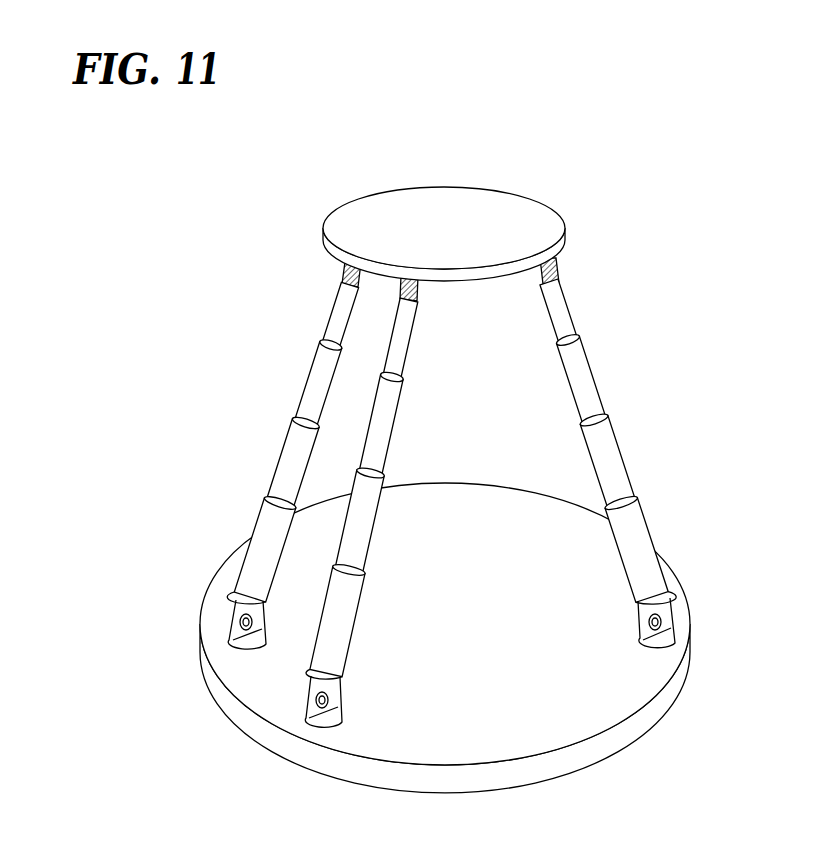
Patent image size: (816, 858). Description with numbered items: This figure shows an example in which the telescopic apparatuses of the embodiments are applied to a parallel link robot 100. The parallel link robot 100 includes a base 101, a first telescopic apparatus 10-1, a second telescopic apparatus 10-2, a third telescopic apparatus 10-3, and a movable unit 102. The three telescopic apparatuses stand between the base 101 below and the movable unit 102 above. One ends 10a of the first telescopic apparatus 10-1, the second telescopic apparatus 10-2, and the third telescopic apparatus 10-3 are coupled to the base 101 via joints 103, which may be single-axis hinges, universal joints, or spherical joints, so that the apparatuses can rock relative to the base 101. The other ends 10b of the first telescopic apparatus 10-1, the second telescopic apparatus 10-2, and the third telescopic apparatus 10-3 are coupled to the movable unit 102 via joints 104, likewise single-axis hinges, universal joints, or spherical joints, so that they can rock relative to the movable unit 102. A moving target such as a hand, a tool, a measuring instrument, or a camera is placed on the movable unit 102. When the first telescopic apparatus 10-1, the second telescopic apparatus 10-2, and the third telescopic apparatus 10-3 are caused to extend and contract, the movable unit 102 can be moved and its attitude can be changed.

The parallel link robot 100 is at (557, 108).
The base 101 is at (538, 730).
The movable unit 102 is at (468, 207).
The joints 103 is at (230, 622).
The joints 104 is at (345, 273).
The first telescopic apparatus 10-1 is at (601, 381).
The second telescopic apparatus 10-2 is at (398, 418).
The third telescopic apparatus 10-3 is at (300, 386).
The one ends 10a is at (248, 582).
The other ends 10b is at (342, 290).